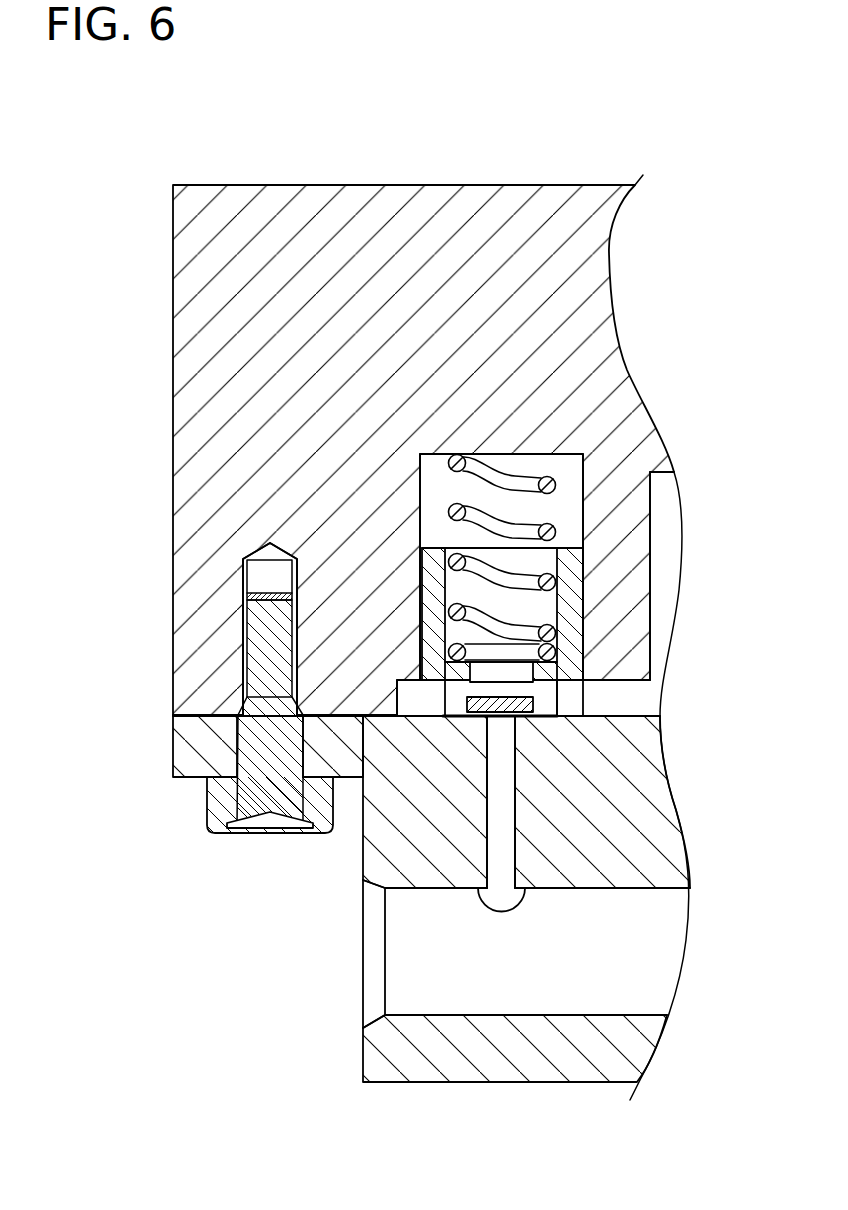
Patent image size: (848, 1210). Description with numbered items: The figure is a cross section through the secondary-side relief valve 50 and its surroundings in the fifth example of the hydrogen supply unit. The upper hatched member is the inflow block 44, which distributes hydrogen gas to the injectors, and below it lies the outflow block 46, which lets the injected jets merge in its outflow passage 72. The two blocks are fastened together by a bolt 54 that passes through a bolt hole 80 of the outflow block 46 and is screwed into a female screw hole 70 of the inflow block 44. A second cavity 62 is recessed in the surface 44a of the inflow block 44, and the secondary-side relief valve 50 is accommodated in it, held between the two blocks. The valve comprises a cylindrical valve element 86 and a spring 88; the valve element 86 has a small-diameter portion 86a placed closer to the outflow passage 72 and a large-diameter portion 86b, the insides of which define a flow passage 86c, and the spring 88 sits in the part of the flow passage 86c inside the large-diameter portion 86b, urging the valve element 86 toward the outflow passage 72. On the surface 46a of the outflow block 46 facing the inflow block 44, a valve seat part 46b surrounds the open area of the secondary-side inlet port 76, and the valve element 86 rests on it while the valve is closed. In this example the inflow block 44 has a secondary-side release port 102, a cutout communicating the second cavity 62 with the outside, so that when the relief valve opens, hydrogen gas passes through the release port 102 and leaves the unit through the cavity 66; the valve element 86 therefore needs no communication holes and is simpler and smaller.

The inflow block 44 is at (173, 578).
The surface of the inflow block 44a is at (197, 717).
The outflow block 46 is at (363, 1053).
The surface of the outflow block 46a is at (627, 716).
The valve seat part 46b is at (477, 708).
The secondary-side relief valve 50 is at (103, 372).
The bolt 54 is at (220, 805).
The second cavity 62 is at (422, 480).
The cavity 66 is at (650, 576).
The female screw hole 70 is at (257, 647).
The outflow passage 72 is at (608, 977).
The secondary-side inlet port 76 is at (490, 857).
The bolt hole 80 is at (250, 772).
The valve element 86 is at (437, 617).
The small-diameter portion 86a is at (548, 699).
The large-diameter portion 86b is at (583, 548).
The flow passage 86c is at (510, 555).
The spring 88 is at (490, 627).
The secondary-side release port 102 is at (620, 693).